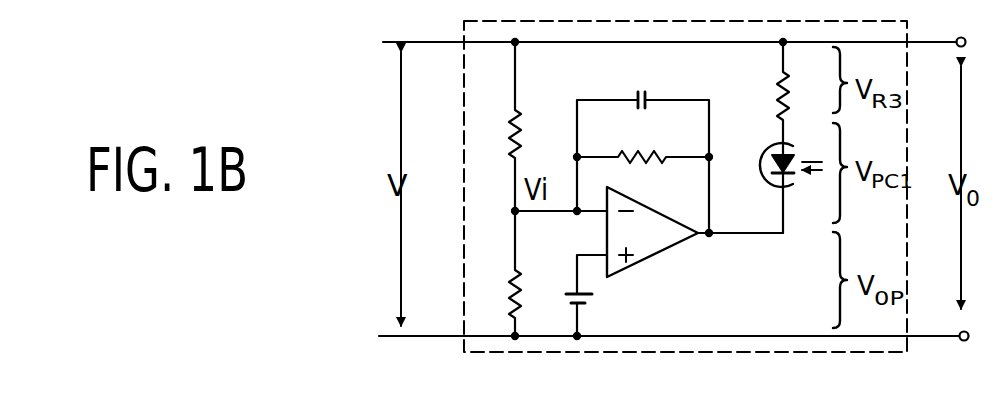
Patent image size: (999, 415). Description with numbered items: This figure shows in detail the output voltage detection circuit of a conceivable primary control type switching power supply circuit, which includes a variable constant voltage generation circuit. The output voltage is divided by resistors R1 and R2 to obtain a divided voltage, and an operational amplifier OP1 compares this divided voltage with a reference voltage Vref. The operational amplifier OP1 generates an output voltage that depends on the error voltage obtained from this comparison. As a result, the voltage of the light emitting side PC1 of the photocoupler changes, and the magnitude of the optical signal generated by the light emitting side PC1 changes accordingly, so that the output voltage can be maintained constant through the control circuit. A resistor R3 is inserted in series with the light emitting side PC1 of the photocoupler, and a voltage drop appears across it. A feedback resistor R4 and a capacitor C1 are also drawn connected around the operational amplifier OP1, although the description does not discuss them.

The resistor R1 is at (493, 126).
The resistor R2 is at (493, 273).
The resistor R3 is at (800, 92).
The feedback resistor R4 is at (643, 139).
The feedback capacitor C1 is at (643, 142).
The operational amplifier OP1 is at (695, 240).
The light emitting side of the photocoupler PC1 is at (795, 188).
The reference voltage Vref is at (605, 295).